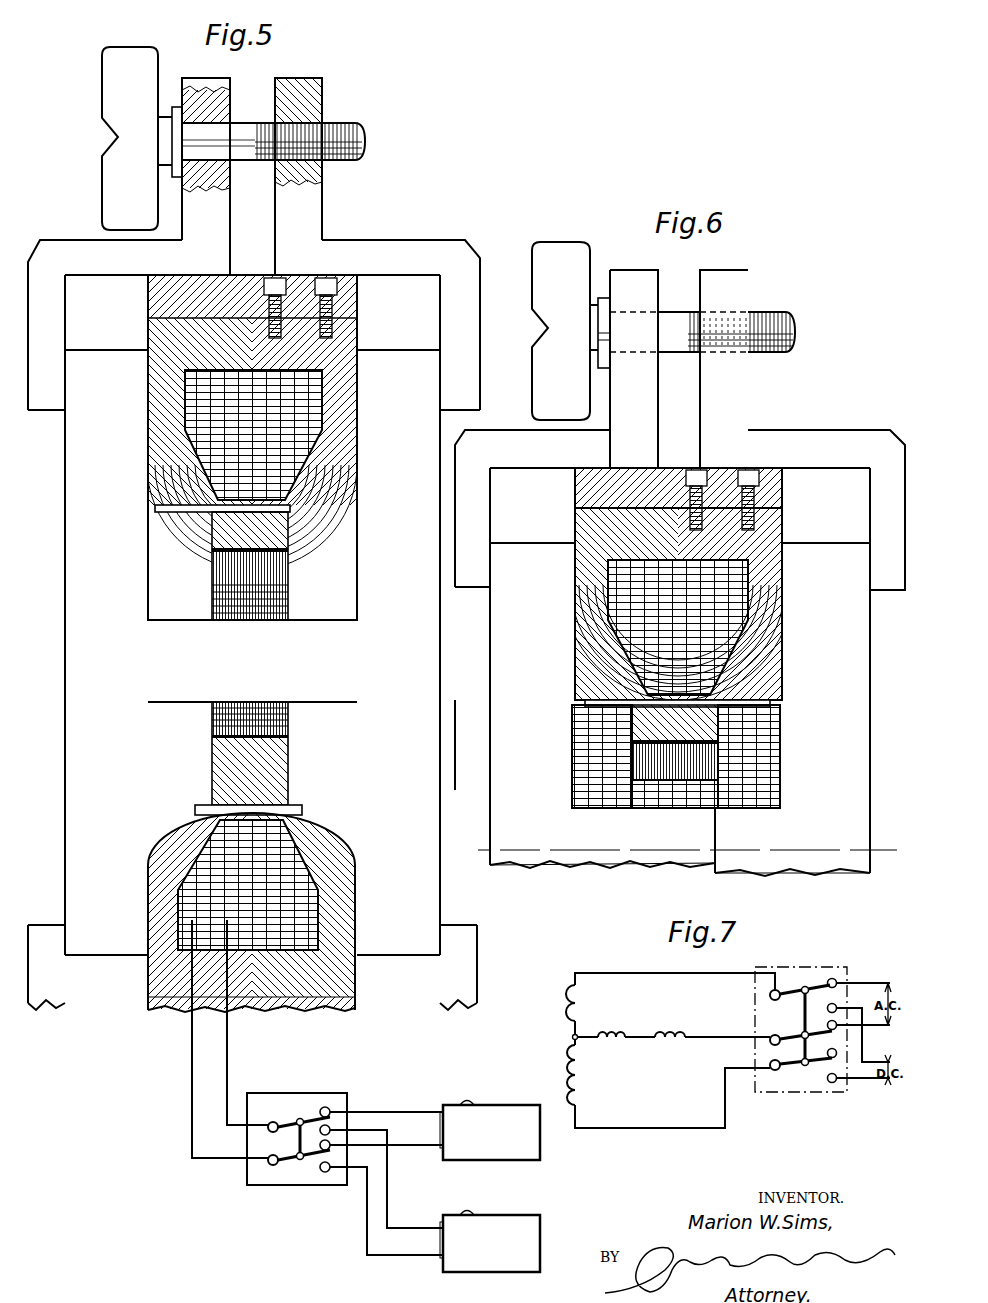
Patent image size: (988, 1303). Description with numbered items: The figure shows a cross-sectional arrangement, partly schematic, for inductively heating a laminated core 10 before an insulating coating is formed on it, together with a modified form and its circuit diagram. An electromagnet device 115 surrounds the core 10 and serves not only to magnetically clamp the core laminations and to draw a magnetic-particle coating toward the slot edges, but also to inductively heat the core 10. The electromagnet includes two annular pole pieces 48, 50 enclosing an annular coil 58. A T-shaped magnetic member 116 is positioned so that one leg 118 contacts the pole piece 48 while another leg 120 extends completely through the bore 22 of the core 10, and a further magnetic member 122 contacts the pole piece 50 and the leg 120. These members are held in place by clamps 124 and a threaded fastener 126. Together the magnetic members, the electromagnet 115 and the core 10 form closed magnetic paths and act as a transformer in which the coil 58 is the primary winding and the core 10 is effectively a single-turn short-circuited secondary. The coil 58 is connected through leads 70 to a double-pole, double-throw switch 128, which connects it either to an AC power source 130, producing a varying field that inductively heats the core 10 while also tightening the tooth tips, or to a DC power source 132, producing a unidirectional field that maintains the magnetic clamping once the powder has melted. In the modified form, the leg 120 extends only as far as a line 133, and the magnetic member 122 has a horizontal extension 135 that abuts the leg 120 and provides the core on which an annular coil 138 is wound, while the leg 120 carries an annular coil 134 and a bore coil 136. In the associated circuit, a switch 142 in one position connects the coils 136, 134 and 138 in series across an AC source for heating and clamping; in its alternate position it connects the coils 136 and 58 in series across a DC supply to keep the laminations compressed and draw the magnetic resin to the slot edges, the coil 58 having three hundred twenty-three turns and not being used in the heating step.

In FIG. 5, the core 10 is at (290, 762).
In FIG. 5, the bore 22 is at (210, 618).
In FIG. 5, the pole piece 48 is at (178, 848).
In FIG. 6, the pole piece 48 is at (576, 595).
In FIG. 5, the pole piece 50 is at (315, 840).
In FIG. 6, the pole piece 50 is at (775, 600).
In FIG. 5, the coil 58 is at (295, 912).
In FIG. 6, the coil 58 is at (722, 621).
In FIG. 7, the coil 58 is at (567, 1073).
In FIG. 5, the leads 70 is at (192, 1079).
In FIG. 5, the electromagnet device 115 is at (370, 339).
In FIG. 5, the T-shaped magnetic member 116 is at (58, 727).
In FIG. 6, the T-shaped magnetic member 116 is at (488, 690).
In FIG. 5, the leg 118 is at (76, 443).
In FIG. 6, the leg 118 is at (510, 620).
In FIG. 5, the leg 120 is at (318, 630).
In FIG. 6, the leg 120 is at (665, 862).
In FIG. 5, the magnetic member 122 is at (425, 782).
In FIG. 6, the magnetic member 122 is at (858, 688).
In FIG. 5, the clamps 124 is at (312, 216).
In FIG. 6, the clamps 124 is at (735, 395).
In FIG. 5, the threaded fastener 126 is at (242, 128).
In FIG. 5, the double-pole, double-throw switch 128 is at (302, 1093).
In FIG. 5, the AC power source 130 is at (500, 1105).
In FIG. 5, the DC power source 132 is at (507, 1215).
In FIG. 6, the line 133 is at (716, 838).
In FIG. 6, the annular coil 134 is at (590, 760).
In FIG. 7, the annular coil 134 is at (612, 1045).
In FIG. 6, the horizontal extension 135 is at (790, 865).
In FIG. 6, the bore coil 136 is at (682, 792).
In FIG. 7, the bore coil 136 is at (566, 1015).
In FIG. 6, the annular coil 138 is at (782, 762).
In FIG. 7, the annular coil 138 is at (668, 1045).
In FIG. 7, the switch 142 is at (820, 966).